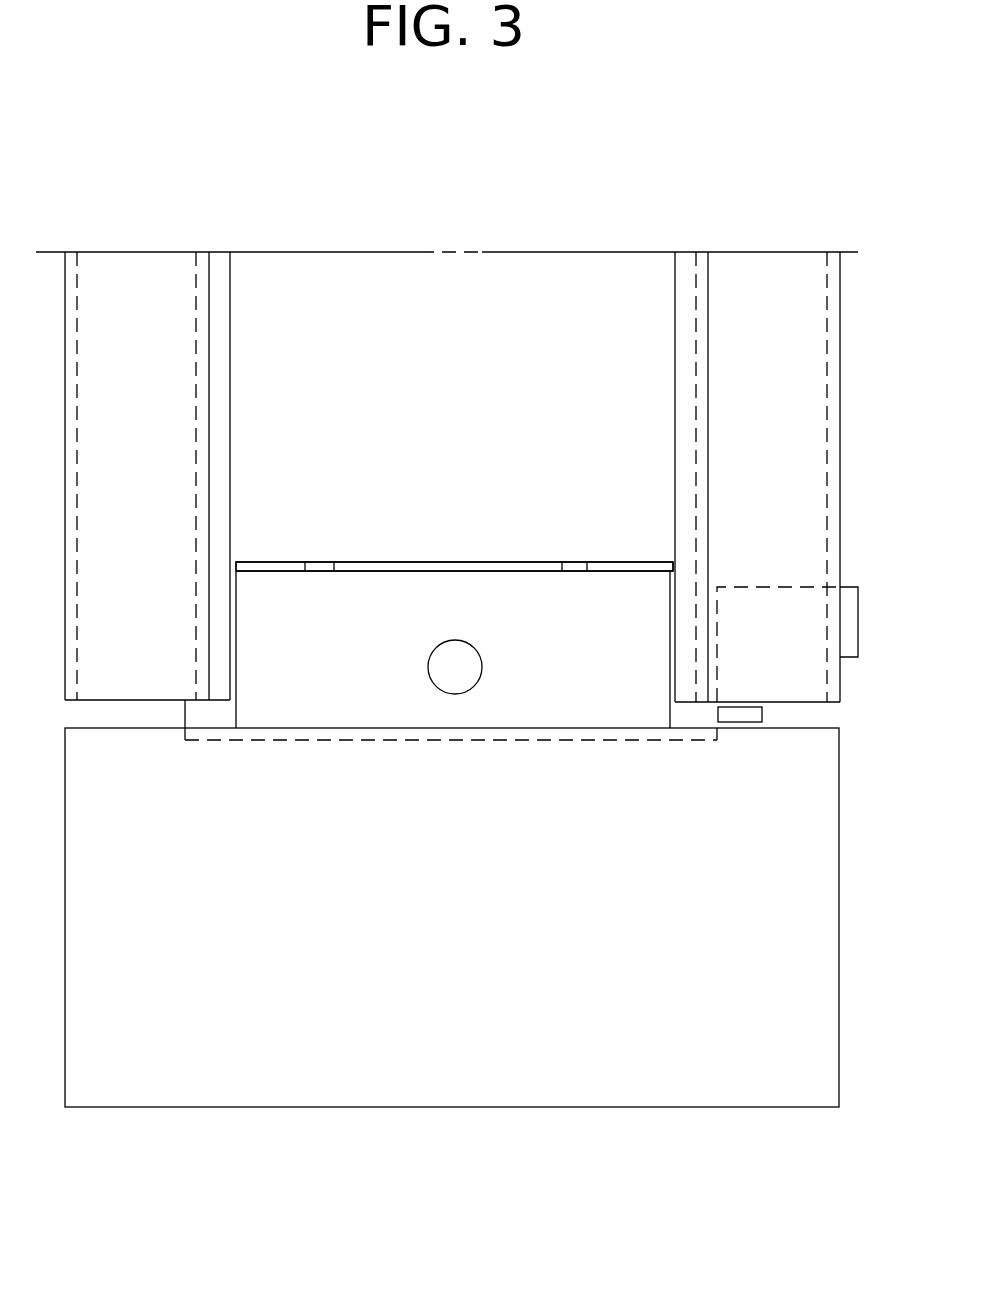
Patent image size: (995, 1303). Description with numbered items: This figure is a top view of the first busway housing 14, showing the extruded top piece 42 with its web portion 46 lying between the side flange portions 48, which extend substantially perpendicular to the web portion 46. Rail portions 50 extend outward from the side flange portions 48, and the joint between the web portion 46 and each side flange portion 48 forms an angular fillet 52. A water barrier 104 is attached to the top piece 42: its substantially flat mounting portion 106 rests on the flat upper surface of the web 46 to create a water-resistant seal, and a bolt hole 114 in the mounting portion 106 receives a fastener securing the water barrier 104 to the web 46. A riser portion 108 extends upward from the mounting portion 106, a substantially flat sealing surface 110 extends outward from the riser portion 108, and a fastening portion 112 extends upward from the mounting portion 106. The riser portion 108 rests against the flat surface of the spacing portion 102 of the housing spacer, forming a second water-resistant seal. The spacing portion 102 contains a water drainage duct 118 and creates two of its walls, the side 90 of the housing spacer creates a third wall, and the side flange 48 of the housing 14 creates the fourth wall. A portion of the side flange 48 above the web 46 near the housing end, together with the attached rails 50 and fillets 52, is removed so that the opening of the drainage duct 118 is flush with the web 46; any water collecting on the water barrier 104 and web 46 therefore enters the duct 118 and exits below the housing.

The busway housing 14 is at (500, 252).
The top piece 42 is at (596, 252).
The web portion 46 is at (452, 380).
The side flange portion 48 is at (718, 716).
The rail portion 50 is at (175, 378).
The angular fillet 52 is at (220, 435).
The side of housing spacer 90 is at (782, 710).
The spacing portion 102 is at (826, 722).
The water barrier 104 is at (328, 1108).
The mounting portion 106 is at (318, 643).
The riser portion 108 is at (308, 728).
The sealing surface 110 is at (468, 941).
The fastening portion 112 is at (437, 562).
The bolt hole 114 is at (447, 668).
The water drainage duct 118 is at (747, 715).